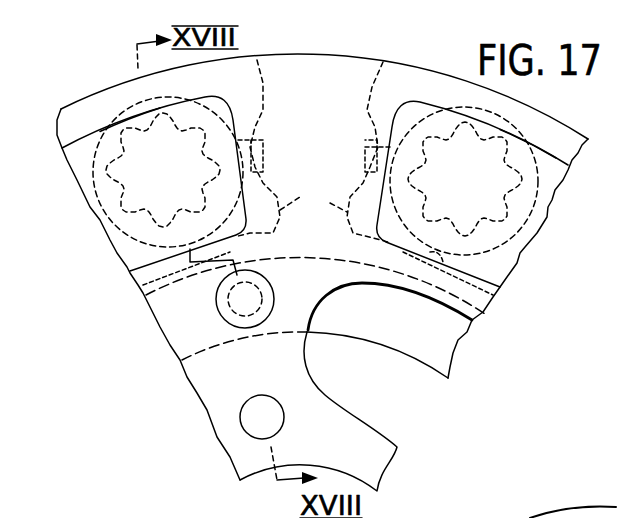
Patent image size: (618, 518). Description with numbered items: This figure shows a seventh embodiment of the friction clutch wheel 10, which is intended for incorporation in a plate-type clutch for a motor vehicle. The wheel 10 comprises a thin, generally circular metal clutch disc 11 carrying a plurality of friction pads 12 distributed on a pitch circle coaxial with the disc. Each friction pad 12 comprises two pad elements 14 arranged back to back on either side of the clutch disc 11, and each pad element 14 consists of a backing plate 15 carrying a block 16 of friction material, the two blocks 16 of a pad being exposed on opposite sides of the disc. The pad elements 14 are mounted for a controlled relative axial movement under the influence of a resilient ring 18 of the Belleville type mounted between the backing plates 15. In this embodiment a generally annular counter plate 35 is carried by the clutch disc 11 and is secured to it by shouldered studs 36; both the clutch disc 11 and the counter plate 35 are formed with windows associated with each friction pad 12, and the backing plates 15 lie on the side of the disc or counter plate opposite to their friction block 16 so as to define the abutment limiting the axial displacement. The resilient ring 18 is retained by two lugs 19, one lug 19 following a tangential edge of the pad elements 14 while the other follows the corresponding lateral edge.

The friction clutch wheel 10 is at (399, 53).
The clutch disc 11 is at (316, 100).
The friction pad 12 is at (125, 72).
The pad element 14 is at (112, 251).
The backing plate 15 is at (343, 207).
The block of friction material 16 is at (178, 178).
The resilient ring 18 is at (121, 110).
The retaining lug 19 is at (362, 148).
The counter plate 35 is at (383, 325).
The shouldered stud 36 is at (243, 300).